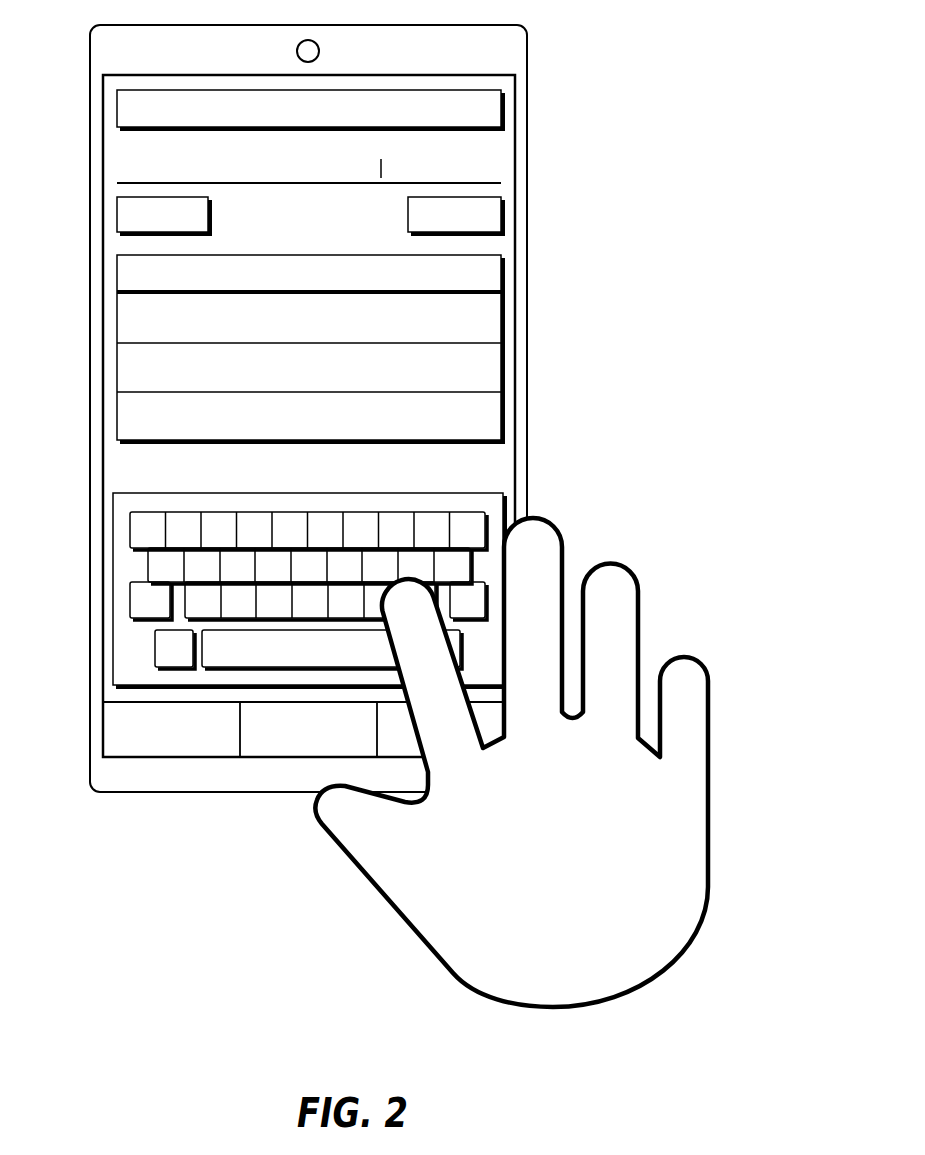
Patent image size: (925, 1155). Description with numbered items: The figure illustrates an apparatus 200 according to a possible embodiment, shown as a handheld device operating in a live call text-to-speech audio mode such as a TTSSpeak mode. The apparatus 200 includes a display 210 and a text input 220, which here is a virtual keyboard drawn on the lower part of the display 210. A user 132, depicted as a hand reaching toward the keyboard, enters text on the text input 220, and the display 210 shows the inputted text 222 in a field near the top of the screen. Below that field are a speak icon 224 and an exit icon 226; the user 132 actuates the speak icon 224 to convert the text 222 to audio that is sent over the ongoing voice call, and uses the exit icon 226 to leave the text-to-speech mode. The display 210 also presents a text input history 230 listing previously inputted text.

The user 132 is at (420, 940).
The apparatus 200 is at (90, 472).
The display 210 is at (103, 324).
The text input 220 is at (113, 632).
The inputted text 222 is at (112, 166).
The speak icon 224 is at (117, 212).
The exit icon 226 is at (504, 222).
The text input history 230 is at (117, 272).